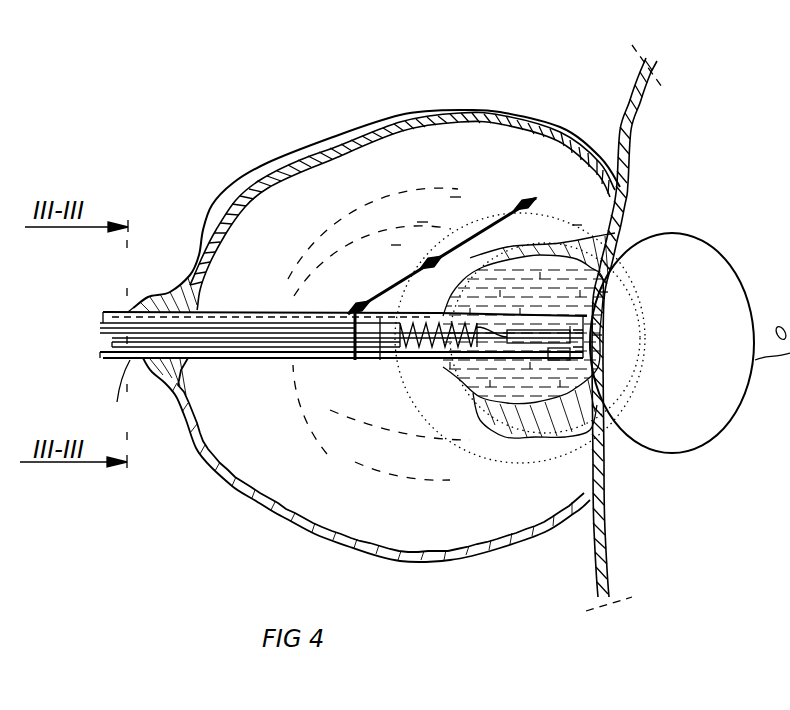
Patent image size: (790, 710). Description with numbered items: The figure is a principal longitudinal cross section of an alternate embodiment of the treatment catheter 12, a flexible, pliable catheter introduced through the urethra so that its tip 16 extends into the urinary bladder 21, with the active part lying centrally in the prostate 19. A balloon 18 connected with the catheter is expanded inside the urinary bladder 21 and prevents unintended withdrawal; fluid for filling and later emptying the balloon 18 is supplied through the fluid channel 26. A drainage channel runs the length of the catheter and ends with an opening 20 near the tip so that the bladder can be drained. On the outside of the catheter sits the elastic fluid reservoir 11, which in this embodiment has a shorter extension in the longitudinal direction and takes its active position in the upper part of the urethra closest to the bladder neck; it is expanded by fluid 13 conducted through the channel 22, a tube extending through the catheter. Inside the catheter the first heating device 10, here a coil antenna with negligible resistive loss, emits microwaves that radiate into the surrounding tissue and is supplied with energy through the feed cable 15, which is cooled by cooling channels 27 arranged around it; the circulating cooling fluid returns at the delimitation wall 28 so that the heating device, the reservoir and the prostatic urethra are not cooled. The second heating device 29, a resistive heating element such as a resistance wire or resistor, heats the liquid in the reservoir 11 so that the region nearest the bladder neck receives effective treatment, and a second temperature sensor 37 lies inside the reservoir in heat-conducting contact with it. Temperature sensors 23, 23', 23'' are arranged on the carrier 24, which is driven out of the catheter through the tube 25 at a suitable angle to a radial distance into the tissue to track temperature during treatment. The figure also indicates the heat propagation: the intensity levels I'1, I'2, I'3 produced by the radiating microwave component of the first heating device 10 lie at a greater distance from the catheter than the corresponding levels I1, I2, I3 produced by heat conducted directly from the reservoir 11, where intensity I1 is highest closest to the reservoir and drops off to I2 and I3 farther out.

The first heating device 10 is at (410, 358).
The fluid reservoir 11 is at (525, 405).
The treatment catheter 12 is at (103, 310).
The fluid 13 is at (487, 400).
The feed cable 15 is at (100, 346).
The tip 16 is at (783, 300).
The balloon 18 is at (685, 446).
The prostate 19 is at (322, 160).
The opening 20 is at (774, 350).
The urinary bladder 21 is at (593, 540).
The channel 22 is at (105, 355).
The temperature sensor 23 is at (363, 227).
The temperature sensor 23' is at (300, 235).
The temperature sensor 23'' is at (252, 281).
The carrier 24 is at (97, 327).
The tube 25 is at (133, 307).
The fluid channel 26 is at (365, 358).
The cooling channels 27 is at (293, 358).
The delimitation wall 28 is at (322, 358).
The second heating device 29 is at (527, 335).
The second temperature sensor 37 is at (555, 363).
The intensity level I'1 is at (483, 128).
The intensity level I'2 is at (497, 131).
The intensity level I'3 is at (512, 133).
The intensity level I1 is at (597, 335).
The intensity level I2 is at (603, 292).
The intensity level I3 is at (577, 225).